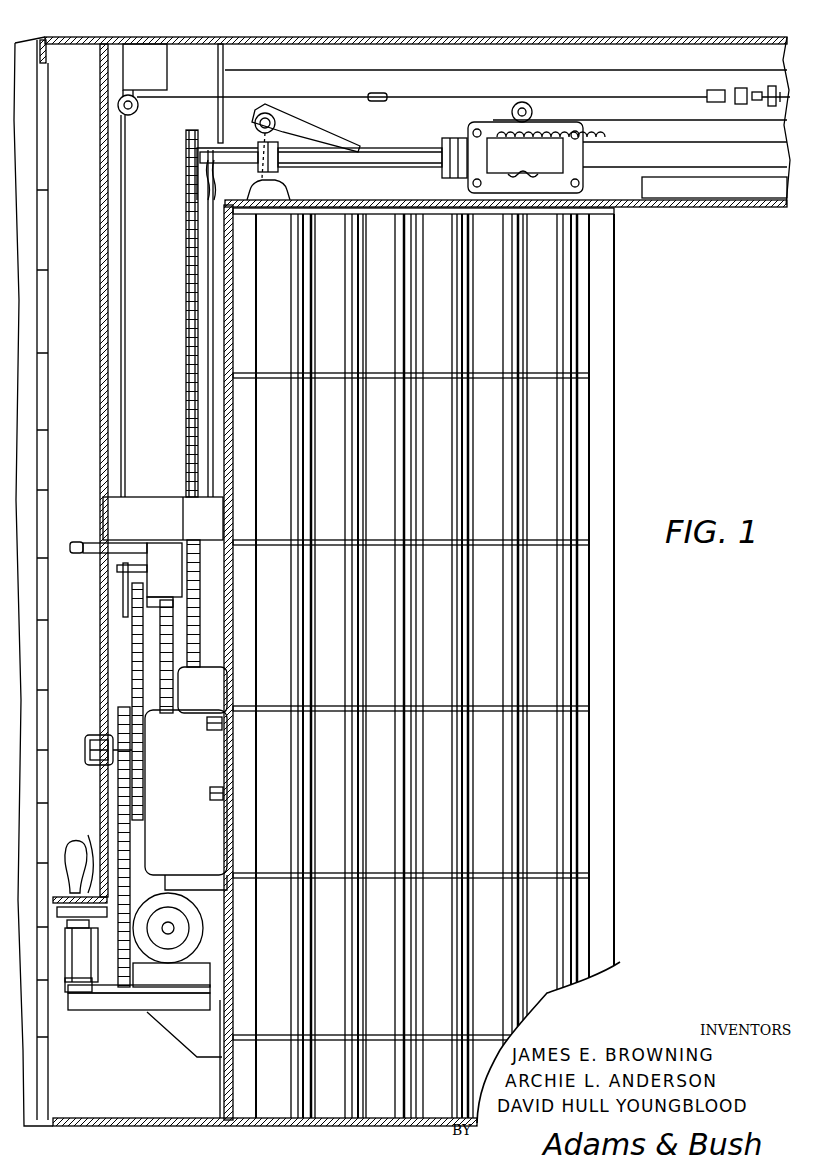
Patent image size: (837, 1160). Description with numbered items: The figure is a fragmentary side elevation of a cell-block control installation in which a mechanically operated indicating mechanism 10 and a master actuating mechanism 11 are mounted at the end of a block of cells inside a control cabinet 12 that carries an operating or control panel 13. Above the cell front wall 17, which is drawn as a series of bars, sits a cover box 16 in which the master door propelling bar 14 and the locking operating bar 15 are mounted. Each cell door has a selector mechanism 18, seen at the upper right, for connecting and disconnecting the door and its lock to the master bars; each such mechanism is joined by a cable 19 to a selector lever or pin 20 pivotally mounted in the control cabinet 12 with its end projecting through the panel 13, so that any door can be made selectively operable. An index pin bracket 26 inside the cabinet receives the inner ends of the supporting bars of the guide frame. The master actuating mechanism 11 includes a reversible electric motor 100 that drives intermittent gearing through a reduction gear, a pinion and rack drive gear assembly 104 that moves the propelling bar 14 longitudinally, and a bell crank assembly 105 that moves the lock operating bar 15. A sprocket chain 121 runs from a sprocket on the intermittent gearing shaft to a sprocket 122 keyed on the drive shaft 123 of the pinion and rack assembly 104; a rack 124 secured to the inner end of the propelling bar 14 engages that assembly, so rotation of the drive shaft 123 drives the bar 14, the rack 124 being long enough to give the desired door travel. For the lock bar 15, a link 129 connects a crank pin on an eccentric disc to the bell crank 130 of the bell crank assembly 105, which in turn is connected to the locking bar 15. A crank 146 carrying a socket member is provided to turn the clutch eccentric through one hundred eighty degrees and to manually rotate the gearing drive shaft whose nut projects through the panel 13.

The mechanically operated indicating mechanism 10 is at (97, 497).
The master actuating mechanism 11 is at (197, 783).
The control cabinet 12 is at (157, 37).
The control panel 13 is at (100, 302).
The door propelling bar 14 is at (598, 130).
The locking operating bar 15 is at (383, 166).
The cover box 16 is at (472, 66).
The cell front wall 17 is at (507, 337).
The selector mechanism 18 is at (773, 73).
The cable 19 is at (333, 95).
The selector lever or pin 20 is at (77, 555).
The index pin bracket 26 is at (163, 518).
The reversible electric motor 100 is at (178, 910).
The pinion and rack drive gear assembly 104 is at (548, 86).
The bell crank assembly 105 is at (282, 188).
The sprocket chain 121 is at (190, 296).
The sprocket 122 is at (200, 142).
The drive shaft 123 is at (380, 150).
The rack 124 is at (557, 123).
The link 129 is at (210, 354).
The bell crank 130 is at (238, 152).
The crank 146 is at (82, 900).